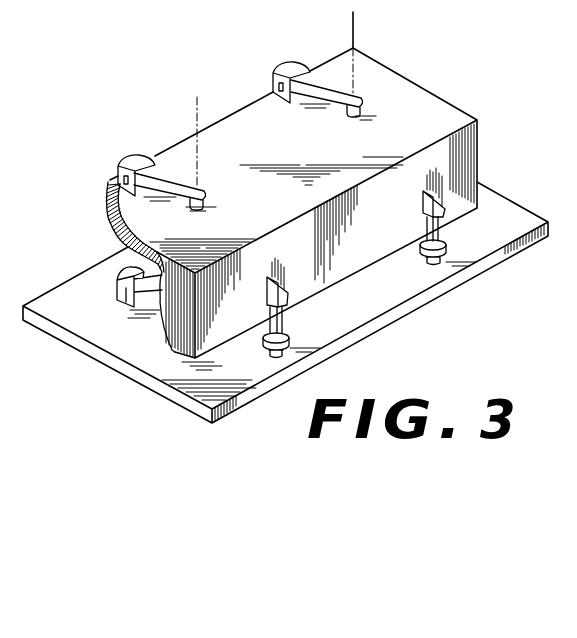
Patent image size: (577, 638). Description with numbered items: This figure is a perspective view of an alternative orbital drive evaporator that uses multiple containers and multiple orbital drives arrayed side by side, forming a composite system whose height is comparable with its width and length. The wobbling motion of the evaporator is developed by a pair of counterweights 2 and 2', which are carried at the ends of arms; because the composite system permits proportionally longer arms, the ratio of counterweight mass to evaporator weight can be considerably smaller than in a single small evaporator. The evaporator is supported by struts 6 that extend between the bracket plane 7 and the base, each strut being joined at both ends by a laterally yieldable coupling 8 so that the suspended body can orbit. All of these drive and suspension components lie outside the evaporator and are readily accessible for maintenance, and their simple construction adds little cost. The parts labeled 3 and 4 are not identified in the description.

The counterweight 2 is at (203, 121).
The counterweight 2' is at (121, 287).
The pin 3 is at (362, 112).
The shaft 4 is at (325, 91).
The strut 6 is at (444, 232).
The bracket plane 7 is at (440, 204).
The laterally yieldable coupling 8 is at (424, 237).